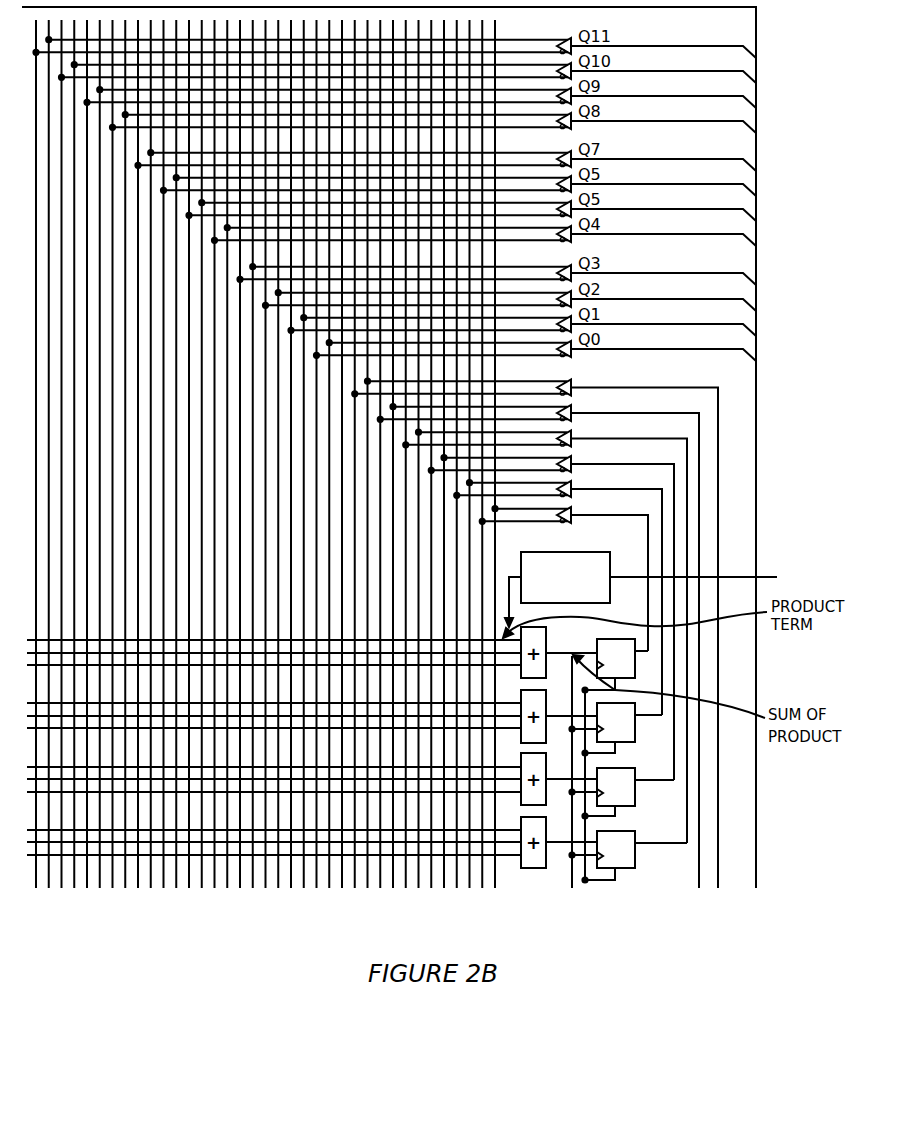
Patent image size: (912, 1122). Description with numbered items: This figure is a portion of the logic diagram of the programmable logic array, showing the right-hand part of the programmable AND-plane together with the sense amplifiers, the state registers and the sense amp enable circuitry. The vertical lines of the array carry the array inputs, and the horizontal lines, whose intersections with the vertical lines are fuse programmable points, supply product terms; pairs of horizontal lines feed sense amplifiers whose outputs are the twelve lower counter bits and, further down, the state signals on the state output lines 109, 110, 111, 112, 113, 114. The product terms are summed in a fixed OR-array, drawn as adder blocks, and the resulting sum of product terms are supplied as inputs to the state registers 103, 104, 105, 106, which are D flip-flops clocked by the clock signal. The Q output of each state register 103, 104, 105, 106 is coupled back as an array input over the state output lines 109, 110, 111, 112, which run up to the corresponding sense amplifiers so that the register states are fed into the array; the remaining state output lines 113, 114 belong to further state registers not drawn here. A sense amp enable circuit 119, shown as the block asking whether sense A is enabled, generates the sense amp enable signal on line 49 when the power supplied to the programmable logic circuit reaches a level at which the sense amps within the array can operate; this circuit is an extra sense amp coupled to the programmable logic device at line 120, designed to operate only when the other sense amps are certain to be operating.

The line carrying sense amp enable signal SAEN 49 is at (767, 576).
The state register 103 is at (640, 668).
The state register 104 is at (638, 732).
The state register 105 is at (638, 798).
The state register 106 is at (638, 860).
The state output line 109 is at (651, 519).
The state output line 110 is at (665, 497).
The state output line 111 is at (677, 474).
The state output line 112 is at (689, 450).
The state output line 113 is at (703, 428).
The state output line 114 is at (724, 398).
The sense amp enable circuit 119 is at (606, 551).
The line coupling extra sense amp to programmable logic device 120 is at (509, 575).